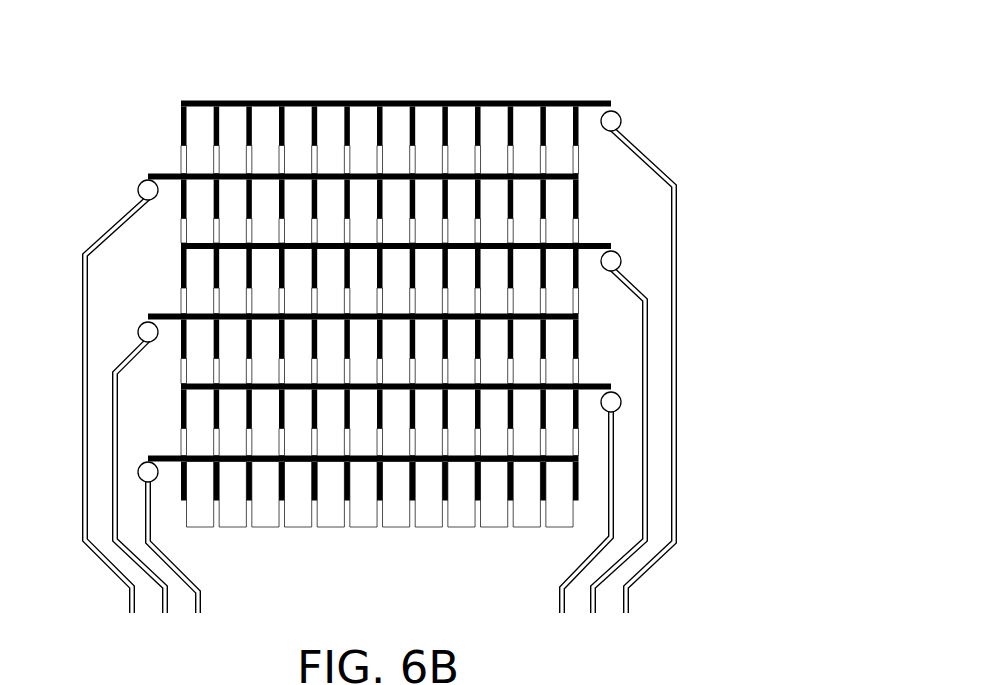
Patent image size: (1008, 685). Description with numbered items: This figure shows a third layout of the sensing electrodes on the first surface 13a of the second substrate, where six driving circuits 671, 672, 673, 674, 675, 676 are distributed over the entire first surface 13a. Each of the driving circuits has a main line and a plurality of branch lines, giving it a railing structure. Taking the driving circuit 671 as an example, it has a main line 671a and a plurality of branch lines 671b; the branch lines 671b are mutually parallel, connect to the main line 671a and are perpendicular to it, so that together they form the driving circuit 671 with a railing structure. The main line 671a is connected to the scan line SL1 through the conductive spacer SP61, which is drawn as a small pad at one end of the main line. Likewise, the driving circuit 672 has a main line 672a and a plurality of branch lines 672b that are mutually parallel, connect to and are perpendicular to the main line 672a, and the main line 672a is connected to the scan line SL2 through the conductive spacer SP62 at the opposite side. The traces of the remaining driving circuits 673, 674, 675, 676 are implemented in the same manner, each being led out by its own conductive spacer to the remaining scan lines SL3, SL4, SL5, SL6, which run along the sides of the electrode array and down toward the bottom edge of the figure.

The first surface 13a is at (800, 34).
The driving circuit 671 is at (410, 95).
The main line 671a is at (490, 100).
The branch lines 671b is at (442, 125).
The driving circuit 672 is at (421, 199).
The main line 672a is at (150, 173).
The branch lines 672b is at (178, 207).
The driving circuit 673 is at (595, 246).
The driving circuit 674 is at (588, 318).
The driving circuit 675 is at (595, 386).
The driving circuit 676 is at (588, 459).
The conductive spacer SP61 is at (622, 118).
The conductive spacer SP62 is at (138, 189).
The scan line SL1 is at (642, 388).
The scan line SL2 is at (118, 423).
The scan line SL3 is at (608, 471).
The scan line SL4 is at (152, 507).
The scan line SL5 is at (572, 529).
The scan line SL6 is at (188, 564).